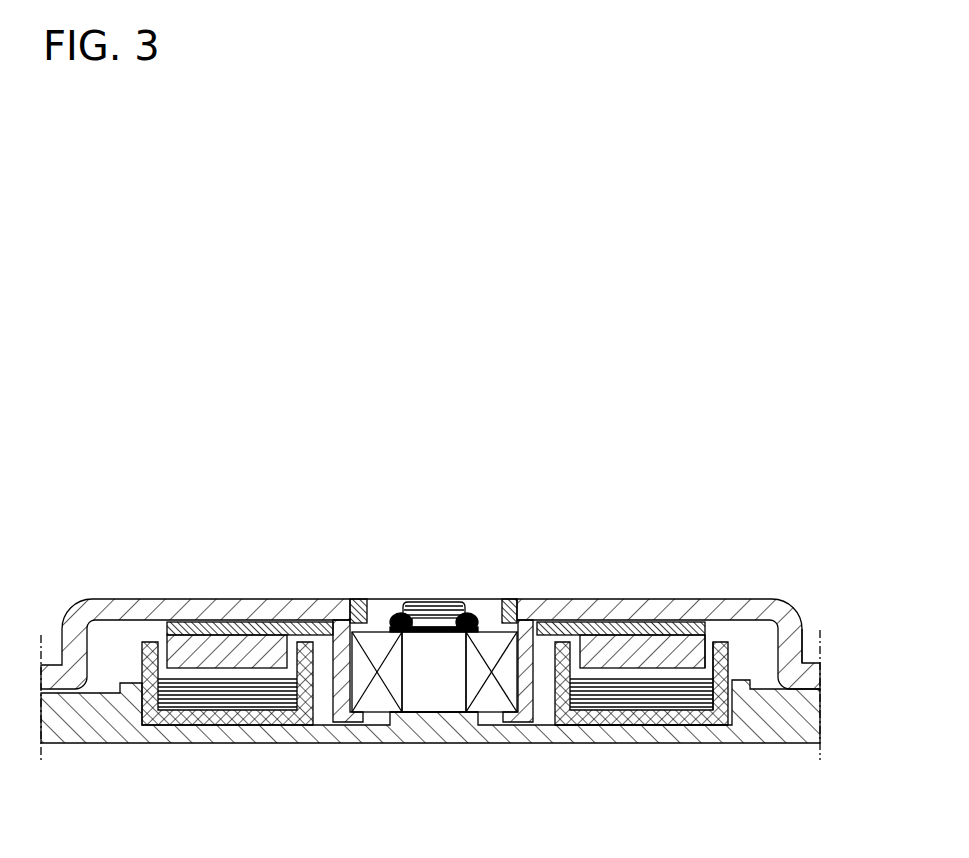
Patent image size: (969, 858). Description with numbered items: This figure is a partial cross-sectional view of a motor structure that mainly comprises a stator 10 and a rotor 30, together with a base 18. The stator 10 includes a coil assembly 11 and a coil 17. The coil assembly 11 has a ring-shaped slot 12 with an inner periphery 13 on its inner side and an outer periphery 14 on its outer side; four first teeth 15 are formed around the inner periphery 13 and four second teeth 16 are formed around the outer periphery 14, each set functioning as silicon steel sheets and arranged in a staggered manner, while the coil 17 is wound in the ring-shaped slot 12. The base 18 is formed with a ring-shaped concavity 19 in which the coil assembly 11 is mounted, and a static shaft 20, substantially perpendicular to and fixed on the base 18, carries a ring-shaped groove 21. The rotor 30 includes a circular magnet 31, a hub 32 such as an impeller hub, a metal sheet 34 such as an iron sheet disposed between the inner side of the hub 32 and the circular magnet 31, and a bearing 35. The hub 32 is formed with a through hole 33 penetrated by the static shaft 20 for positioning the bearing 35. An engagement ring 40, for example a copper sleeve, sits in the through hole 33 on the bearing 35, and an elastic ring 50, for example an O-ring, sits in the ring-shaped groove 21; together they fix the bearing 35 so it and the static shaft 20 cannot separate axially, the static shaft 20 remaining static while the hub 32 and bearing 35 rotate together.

The stator 10 is at (833, 718).
The coil assembly 11 is at (628, 698).
The ring-shaped slot 12 is at (803, 633).
The inner periphery 13 is at (584, 666).
The outer periphery 14 is at (700, 668).
The first teeth 15 is at (563, 640).
The second teeth 16 is at (730, 655).
The coil 17 is at (618, 717).
The base 18 is at (550, 733).
The ring-shaped concavity 19 is at (719, 722).
The static shaft 20 is at (437, 695).
The ring-shaped groove 21 is at (430, 618).
The rotor 30 is at (790, 596).
The circular magnet 31 is at (178, 624).
The hub 32 is at (110, 606).
The through hole 33 is at (368, 608).
The metal sheet 34 is at (256, 618).
The bearing 35 is at (490, 640).
The engagement ring 40 is at (512, 604).
The elastic ring 50 is at (388, 606).